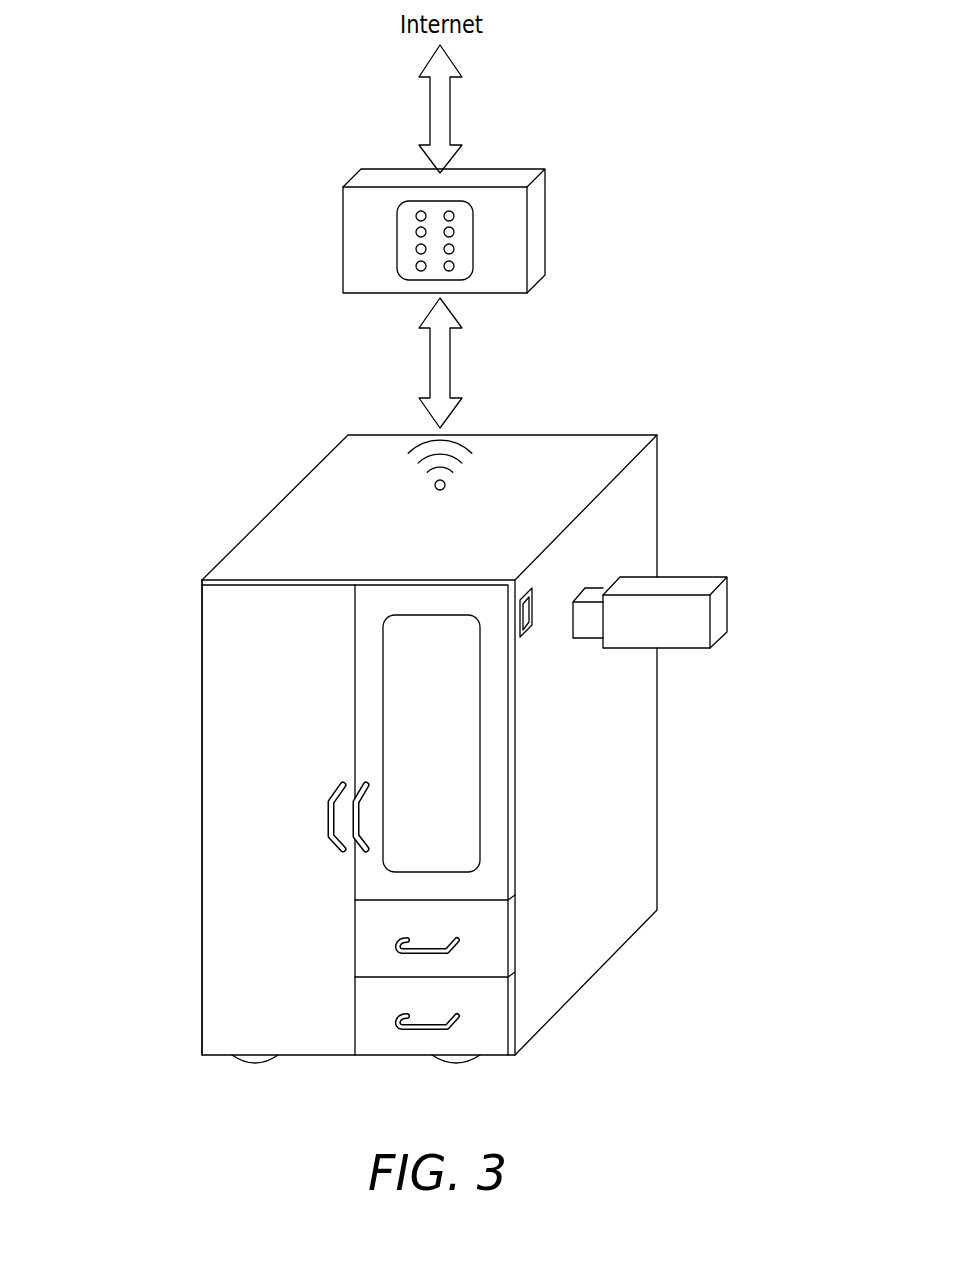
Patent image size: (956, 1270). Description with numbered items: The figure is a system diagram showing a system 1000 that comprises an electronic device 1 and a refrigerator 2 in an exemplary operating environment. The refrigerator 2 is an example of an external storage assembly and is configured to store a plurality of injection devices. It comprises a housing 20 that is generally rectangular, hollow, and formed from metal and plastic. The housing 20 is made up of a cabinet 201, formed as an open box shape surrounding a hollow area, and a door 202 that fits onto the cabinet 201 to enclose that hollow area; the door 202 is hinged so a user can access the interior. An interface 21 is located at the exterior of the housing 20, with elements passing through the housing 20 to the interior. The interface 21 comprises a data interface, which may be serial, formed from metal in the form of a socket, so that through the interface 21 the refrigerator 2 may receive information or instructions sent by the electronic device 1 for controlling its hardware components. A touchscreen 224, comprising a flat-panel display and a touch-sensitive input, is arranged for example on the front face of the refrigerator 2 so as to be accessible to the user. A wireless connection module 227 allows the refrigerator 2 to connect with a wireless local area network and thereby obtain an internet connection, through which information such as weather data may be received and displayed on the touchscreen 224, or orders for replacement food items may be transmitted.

The system 1000 is at (659, 338).
The housing 20 is at (163, 514).
The cabinet 201 is at (231, 568).
The door 202 is at (207, 602).
The wireless connection module 227 is at (468, 453).
The interface 21 is at (523, 634).
The touchscreen 224 is at (463, 818).
The refrigerator 2 is at (385, 1057).
The electronic device 1 is at (720, 608).